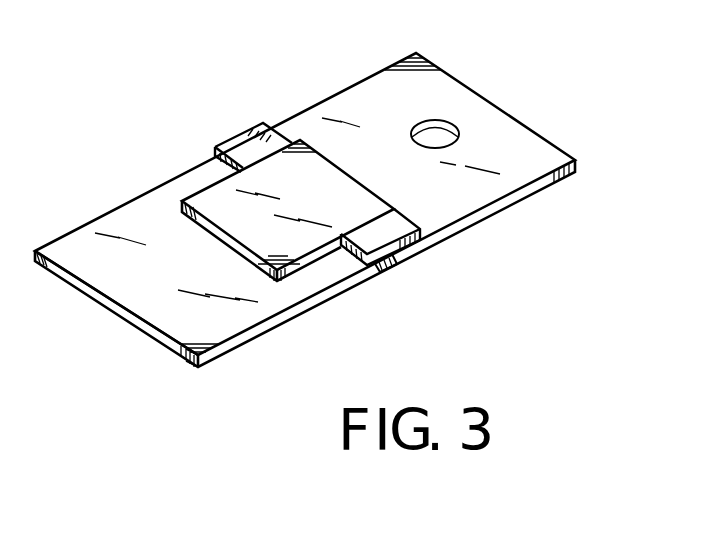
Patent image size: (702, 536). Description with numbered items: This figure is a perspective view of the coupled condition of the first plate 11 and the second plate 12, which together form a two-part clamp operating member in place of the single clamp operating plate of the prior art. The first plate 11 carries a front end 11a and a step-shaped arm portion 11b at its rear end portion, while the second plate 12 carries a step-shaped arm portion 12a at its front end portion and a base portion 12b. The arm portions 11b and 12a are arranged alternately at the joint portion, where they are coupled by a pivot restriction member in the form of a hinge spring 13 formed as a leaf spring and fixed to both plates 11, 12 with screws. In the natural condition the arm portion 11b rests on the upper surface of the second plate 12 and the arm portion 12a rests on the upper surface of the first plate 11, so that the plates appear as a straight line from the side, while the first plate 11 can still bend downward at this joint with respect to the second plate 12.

The first plate 11 is at (348, 112).
The front end 11a is at (487, 120).
The arm portion 11b is at (207, 200).
The second plate 12 is at (158, 288).
The arm portion 12a is at (245, 141).
The base portion 12b is at (165, 330).
The hinge spring 13 is at (383, 280).